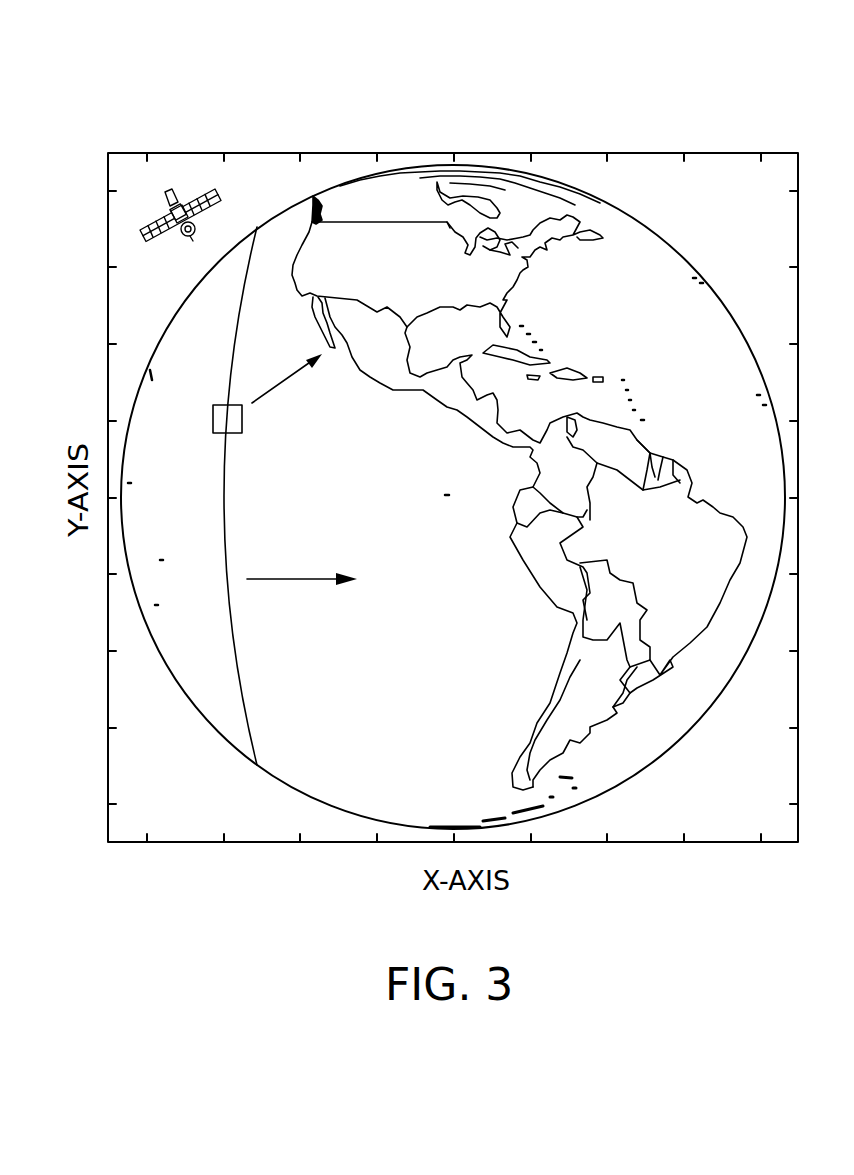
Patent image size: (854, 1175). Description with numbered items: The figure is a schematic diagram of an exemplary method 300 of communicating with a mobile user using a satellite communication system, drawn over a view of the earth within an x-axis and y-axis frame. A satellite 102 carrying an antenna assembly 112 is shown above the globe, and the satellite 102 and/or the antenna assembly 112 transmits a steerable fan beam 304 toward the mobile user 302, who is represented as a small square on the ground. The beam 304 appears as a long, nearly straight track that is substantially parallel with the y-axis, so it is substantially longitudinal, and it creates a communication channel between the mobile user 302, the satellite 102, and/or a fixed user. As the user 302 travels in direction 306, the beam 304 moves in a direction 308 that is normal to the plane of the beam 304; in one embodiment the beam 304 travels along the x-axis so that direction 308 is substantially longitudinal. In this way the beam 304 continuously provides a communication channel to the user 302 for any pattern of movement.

The method of communicating with a mobile user 300 is at (146, 76).
The satellite 102 is at (163, 198).
The antenna assembly 112 is at (177, 208).
The mobile user 302 is at (242, 430).
The steerable fan beam 304 is at (225, 494).
The direction of user travel 306 is at (277, 386).
The beam movement direction 308 is at (292, 578).